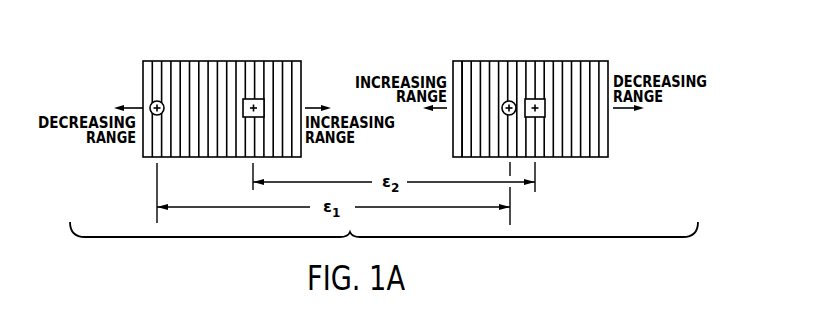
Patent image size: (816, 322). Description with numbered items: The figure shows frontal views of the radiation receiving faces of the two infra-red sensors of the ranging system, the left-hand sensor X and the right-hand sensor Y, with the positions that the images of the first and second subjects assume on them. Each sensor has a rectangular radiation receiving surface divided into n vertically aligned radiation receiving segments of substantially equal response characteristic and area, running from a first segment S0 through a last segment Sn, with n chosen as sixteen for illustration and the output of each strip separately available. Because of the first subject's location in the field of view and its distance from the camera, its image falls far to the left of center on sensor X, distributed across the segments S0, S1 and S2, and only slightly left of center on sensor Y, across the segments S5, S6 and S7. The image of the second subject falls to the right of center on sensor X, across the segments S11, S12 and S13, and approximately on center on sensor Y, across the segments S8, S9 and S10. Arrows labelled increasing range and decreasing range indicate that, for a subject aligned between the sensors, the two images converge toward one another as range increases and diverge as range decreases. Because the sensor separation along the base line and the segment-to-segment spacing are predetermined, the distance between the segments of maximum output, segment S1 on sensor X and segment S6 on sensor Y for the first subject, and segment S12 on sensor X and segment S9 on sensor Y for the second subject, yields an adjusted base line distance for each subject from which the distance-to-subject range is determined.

The radiation receiving segment S0 is at (148, 61).
The radiation receiving segment S1 is at (157, 61).
The radiation receiving segment S2 is at (165, 61).
The radiation receiving segment S5 is at (500, 61).
The radiation receiving segment S6 is at (512, 61).
The radiation receiving segment S7 is at (518, 61).
The radiation receiving segment S8 is at (527, 61).
The radiation receiving segment S9 is at (537, 61).
The radiation receiving segment S10 is at (546, 61).
The radiation receiving segment S11 is at (246, 61).
The radiation receiving segment S12 is at (255, 61).
The radiation receiving segment S13 is at (260, 61).
The radiation receiving segment Sn is at (298, 61).